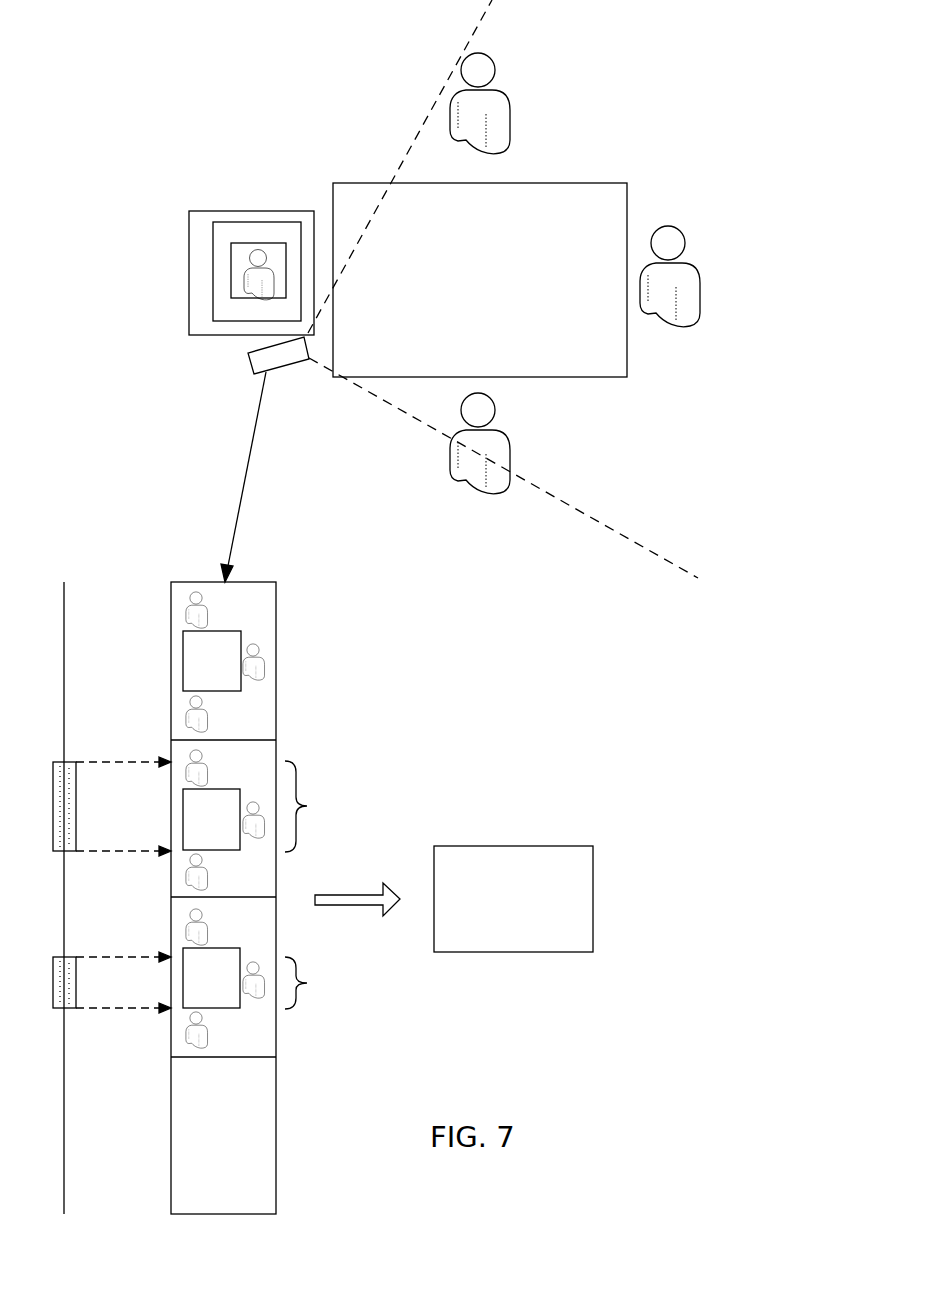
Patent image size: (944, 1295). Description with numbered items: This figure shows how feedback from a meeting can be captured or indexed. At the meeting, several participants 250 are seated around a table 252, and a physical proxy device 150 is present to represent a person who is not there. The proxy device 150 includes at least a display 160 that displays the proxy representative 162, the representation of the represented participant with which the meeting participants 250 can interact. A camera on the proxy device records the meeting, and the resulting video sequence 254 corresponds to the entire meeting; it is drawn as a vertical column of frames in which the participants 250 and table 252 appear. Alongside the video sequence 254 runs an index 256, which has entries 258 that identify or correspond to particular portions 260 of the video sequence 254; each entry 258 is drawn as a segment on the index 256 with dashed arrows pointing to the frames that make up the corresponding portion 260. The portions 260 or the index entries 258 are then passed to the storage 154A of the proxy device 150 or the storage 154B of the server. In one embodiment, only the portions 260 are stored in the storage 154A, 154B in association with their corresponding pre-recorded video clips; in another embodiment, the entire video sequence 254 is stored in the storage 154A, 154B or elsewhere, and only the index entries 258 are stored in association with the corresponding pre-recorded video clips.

The proxy device 150 is at (187, 284).
The display 160 is at (228, 242).
The proxy representative 162 is at (252, 282).
The participants 250 is at (540, 62).
The table 252 is at (500, 292).
The video sequence 254 is at (320, 603).
The index 256 is at (84, 577).
The entries 258 is at (47, 819).
The portions 260 is at (349, 817).
The storage 154A is at (548, 896).
The storage 154B is at (546, 925).